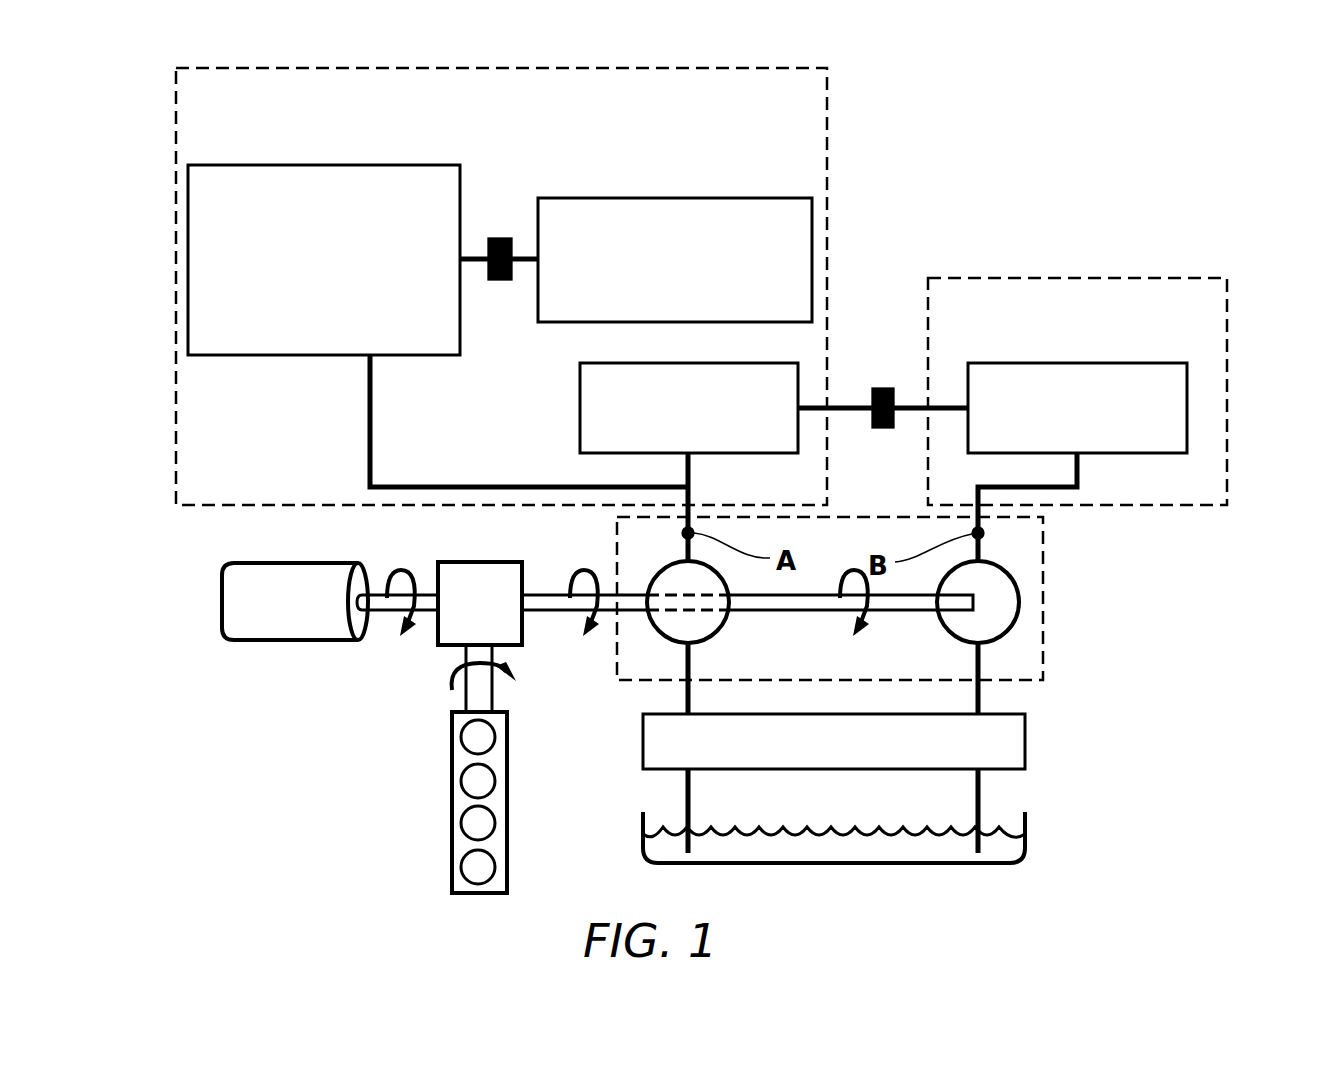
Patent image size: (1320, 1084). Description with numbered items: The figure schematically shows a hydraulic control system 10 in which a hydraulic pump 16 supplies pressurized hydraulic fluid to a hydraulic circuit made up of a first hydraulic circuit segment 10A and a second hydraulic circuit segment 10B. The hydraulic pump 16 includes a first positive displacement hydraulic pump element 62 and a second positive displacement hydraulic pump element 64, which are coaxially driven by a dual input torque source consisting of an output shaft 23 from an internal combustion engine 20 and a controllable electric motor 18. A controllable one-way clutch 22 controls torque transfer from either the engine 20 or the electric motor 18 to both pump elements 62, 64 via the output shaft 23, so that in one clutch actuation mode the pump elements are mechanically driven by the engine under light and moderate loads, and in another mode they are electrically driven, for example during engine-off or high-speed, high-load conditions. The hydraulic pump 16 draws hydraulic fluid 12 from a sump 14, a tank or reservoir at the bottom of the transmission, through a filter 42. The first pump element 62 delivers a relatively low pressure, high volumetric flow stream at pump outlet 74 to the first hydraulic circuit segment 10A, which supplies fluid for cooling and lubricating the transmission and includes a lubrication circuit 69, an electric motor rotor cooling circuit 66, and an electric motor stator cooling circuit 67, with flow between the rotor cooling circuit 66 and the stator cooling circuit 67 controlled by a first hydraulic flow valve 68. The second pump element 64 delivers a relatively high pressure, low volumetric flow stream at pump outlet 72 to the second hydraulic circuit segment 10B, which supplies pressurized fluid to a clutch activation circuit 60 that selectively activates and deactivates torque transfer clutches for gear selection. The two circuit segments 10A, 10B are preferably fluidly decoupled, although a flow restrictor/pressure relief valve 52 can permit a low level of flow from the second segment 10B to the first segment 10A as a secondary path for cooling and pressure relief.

The hydraulic control system 10 is at (974, 197).
The first hydraulic circuit segment 10A is at (827, 113).
The second hydraulic circuit segment 10B is at (1133, 278).
The hydraulic fluid 12 is at (838, 850).
The sump 14 is at (1015, 843).
The hydraulic pump 16 is at (1043, 570).
The electric motor 18 is at (280, 640).
The internal combustion engine 20 is at (452, 750).
The controllable one-way clutch 22 is at (522, 630).
The output shaft 23 is at (535, 595).
The filter 42 is at (1012, 737).
The flow restrictor/pressure relief valve 52 is at (882, 388).
The clutch activation circuit 60 is at (1083, 363).
The first positive displacement hydraulic pump element 62 is at (718, 628).
The second positive displacement hydraulic pump element 64 is at (1018, 598).
The electric motor rotor cooling circuit 66 is at (324, 165).
The electric motor stator cooling circuit 67 is at (728, 198).
The first hydraulic flow valve 68 is at (500, 238).
The lubrication circuit 69 is at (580, 408).
The pump outlet 72 is at (1080, 465).
The pump outlet 74 is at (690, 500).